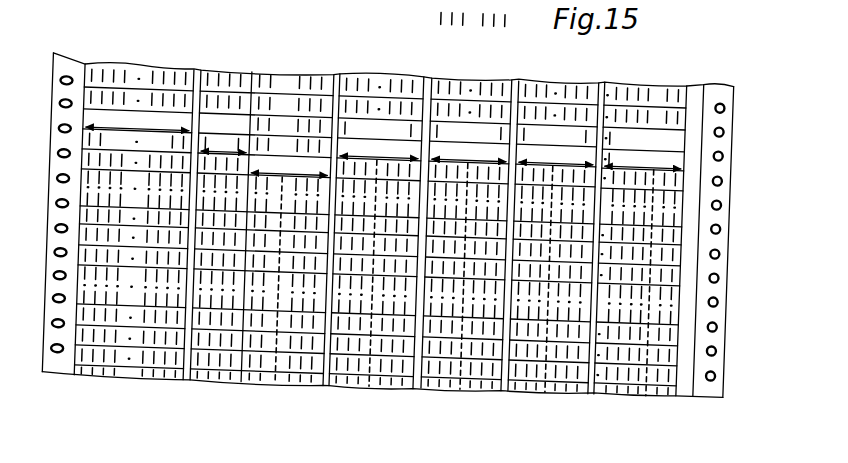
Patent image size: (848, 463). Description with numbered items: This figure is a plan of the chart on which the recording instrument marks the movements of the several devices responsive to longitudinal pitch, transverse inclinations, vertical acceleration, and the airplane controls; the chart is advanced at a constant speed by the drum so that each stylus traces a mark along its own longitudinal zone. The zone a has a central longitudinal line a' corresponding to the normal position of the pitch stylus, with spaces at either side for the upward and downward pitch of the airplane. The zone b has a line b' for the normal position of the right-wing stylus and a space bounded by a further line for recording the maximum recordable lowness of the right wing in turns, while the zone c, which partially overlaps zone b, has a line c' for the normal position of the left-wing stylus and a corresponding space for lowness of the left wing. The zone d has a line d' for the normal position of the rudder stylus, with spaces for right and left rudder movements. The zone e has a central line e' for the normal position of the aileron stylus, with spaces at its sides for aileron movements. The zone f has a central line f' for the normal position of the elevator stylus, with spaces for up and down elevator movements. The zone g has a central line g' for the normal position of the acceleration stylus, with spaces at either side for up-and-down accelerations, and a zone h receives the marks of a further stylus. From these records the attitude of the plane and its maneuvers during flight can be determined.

The zone a is at (133, 254).
The central longitudinal line a' is at (133, 243).
The zone b is at (261, 257).
The line b' is at (206, 256).
The zone c is at (271, 303).
The line c' is at (309, 248).
The zone d is at (398, 246).
The line d' is at (379, 251).
The zone e is at (462, 253).
The central line e' is at (494, 290).
The zone f is at (576, 255).
The central line f' is at (551, 250).
The zone g is at (663, 246).
The central line g' is at (703, 273).
The zone h is at (688, 366).